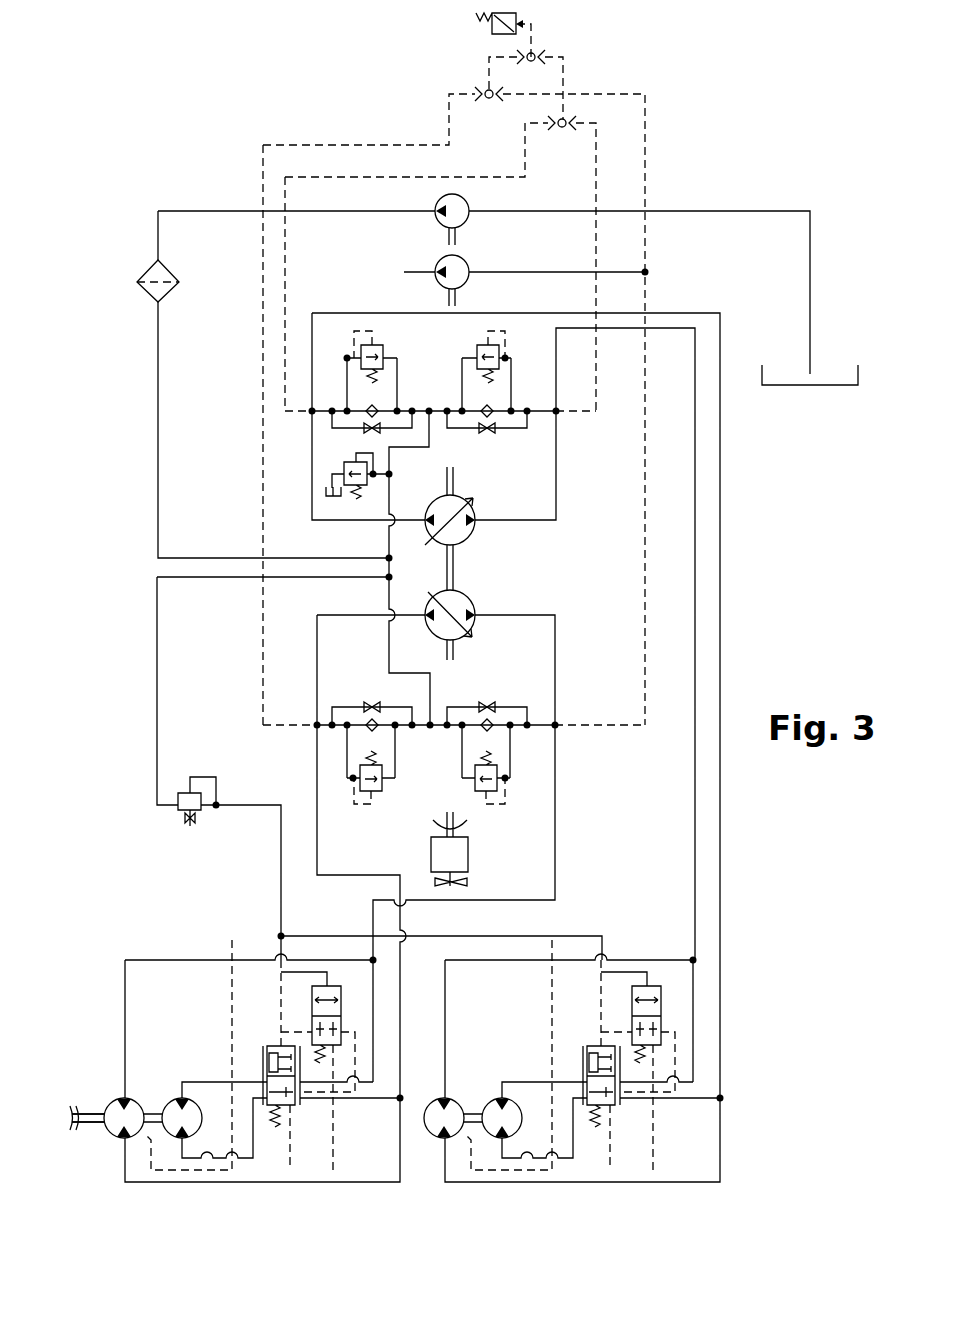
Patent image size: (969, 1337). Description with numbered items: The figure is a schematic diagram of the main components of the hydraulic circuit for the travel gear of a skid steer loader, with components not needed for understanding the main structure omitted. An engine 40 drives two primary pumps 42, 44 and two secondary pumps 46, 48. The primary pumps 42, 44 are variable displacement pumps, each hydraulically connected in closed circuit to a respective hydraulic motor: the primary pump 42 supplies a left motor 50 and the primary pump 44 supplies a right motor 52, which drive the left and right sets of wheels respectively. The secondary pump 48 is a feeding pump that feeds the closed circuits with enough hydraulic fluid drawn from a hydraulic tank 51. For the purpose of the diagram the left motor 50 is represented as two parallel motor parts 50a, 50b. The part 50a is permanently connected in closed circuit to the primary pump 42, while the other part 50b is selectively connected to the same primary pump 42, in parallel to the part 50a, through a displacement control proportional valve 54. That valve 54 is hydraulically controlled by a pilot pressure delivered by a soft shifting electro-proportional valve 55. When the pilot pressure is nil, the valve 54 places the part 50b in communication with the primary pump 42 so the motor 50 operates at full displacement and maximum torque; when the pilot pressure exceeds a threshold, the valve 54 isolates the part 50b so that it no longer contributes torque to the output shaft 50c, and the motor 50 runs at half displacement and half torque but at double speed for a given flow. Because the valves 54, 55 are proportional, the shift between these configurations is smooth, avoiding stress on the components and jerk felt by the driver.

The engine 40 is at (462, 856).
The primary pump 42 is at (463, 598).
The primary pump 44 is at (458, 497).
The secondary pump 46 is at (440, 262).
The secondary pump 48 is at (465, 221).
The left motor 50 is at (85, 1122).
The motor part 50a is at (117, 1098).
The motor part 50b is at (172, 1105).
The output shaft 50c is at (73, 1115).
The hydraulic tank 51 is at (785, 386).
The right motor 52 is at (432, 1094).
The displacement control proportional valve 54 is at (274, 1046).
The soft shifting electro-proportional valve 55 is at (207, 813).